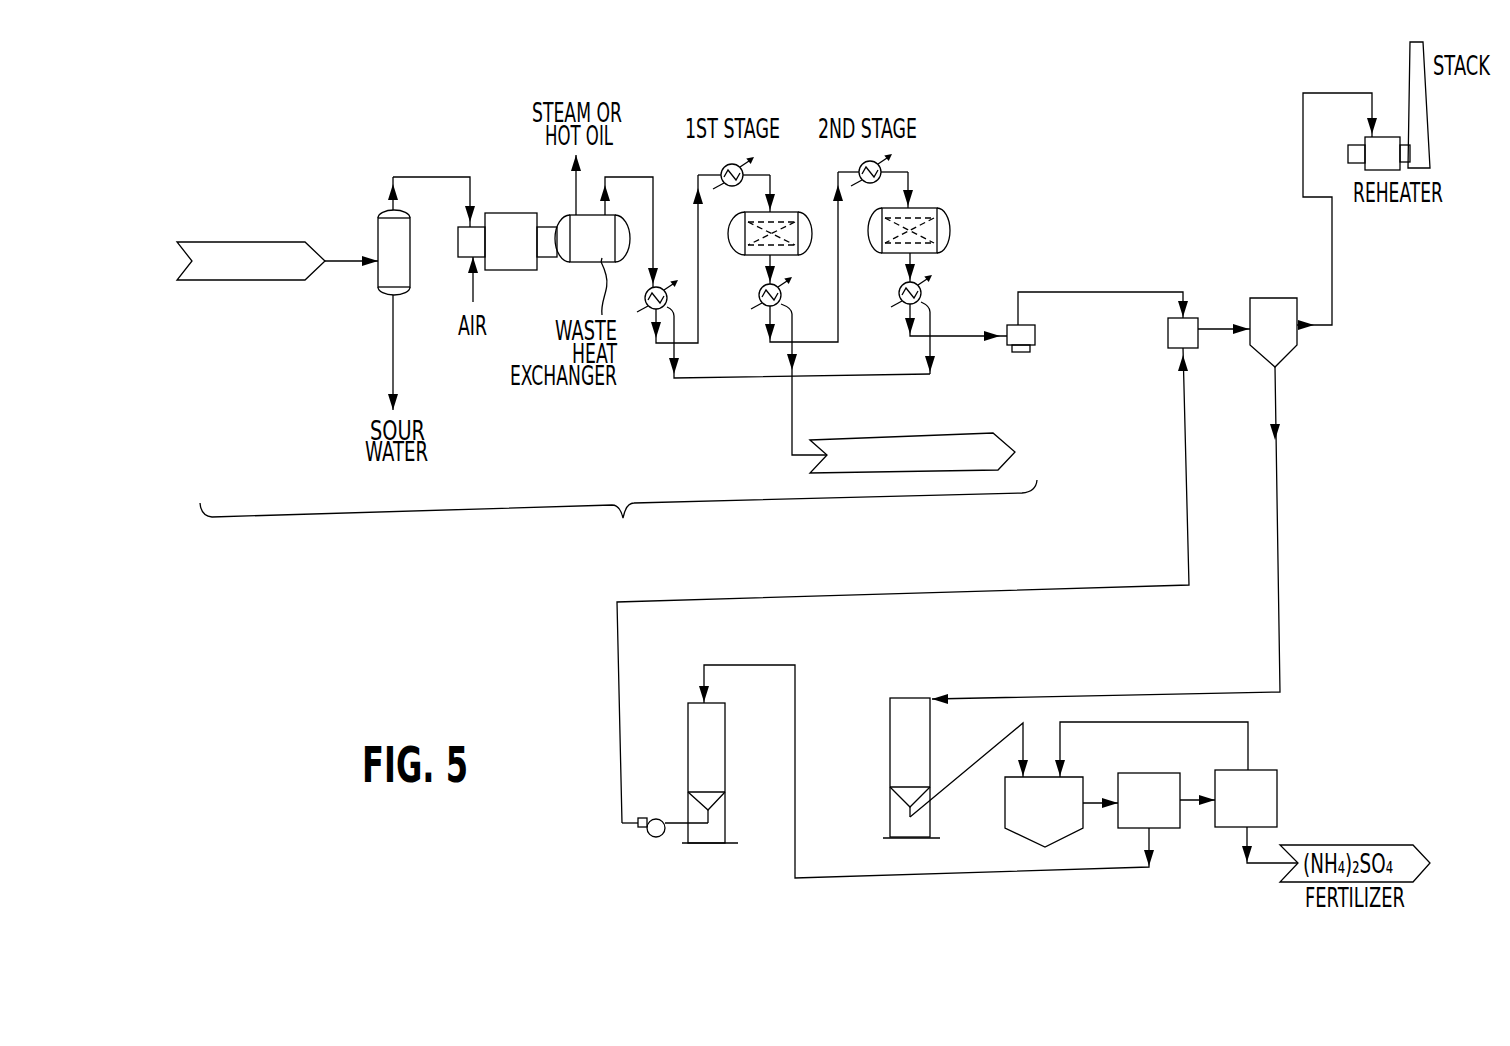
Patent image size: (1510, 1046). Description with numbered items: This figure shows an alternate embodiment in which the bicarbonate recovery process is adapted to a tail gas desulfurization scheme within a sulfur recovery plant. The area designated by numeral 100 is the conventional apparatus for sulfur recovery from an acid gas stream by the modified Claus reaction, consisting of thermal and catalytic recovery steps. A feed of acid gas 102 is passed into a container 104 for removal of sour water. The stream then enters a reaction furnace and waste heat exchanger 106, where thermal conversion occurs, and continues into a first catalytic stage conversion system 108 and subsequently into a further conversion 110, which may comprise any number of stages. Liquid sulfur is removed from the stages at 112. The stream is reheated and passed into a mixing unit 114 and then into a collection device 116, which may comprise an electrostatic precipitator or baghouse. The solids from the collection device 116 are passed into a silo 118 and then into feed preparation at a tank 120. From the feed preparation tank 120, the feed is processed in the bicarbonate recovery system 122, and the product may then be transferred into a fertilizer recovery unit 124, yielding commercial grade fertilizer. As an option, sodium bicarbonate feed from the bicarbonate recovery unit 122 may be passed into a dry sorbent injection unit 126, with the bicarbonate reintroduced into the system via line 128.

The sulfur recovery apparatus area 100 is at (618, 520).
The acid gas feed 102 is at (238, 282).
The container 104 is at (377, 231).
The reaction furnace and waste heat exchanger 106 is at (586, 259).
The first catalytic stage conversion system 108 is at (795, 211).
The further conversion 110 is at (928, 208).
The liquid sulfur removal 112 is at (975, 420).
The mixing unit 114 is at (1168, 332).
The collection device 116 is at (1287, 357).
The silo 118 is at (890, 762).
The feed preparation tank 120 is at (1005, 813).
The bicarbonate recovery system 122 is at (1118, 817).
The fertilizer recovery unit 124 is at (1215, 812).
The dry sorbent injection unit 126 is at (698, 735).
The line 128 is at (620, 711).